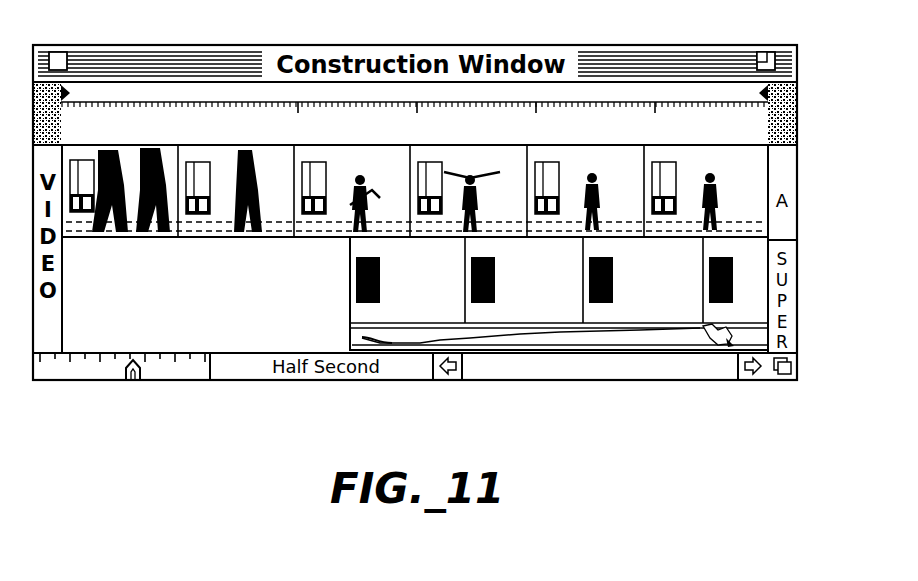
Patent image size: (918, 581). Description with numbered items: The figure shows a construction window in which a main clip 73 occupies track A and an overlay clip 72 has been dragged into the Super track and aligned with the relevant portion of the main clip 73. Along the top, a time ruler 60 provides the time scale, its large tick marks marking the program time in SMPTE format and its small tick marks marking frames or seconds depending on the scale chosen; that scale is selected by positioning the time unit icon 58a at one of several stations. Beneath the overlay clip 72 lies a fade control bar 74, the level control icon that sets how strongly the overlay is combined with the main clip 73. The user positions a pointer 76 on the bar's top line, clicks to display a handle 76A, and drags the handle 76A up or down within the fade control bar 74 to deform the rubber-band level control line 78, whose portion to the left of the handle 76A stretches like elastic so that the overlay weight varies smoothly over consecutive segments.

The time ruler 60 is at (450, 118).
The main clip 73 is at (690, 157).
The overlay clip 72 is at (348, 243).
The fade control bar 74 is at (392, 343).
The rubber-band level control line 78 is at (505, 340).
The handle 76A is at (706, 327).
The pointer 76 is at (730, 346).
The time unit icon 58a is at (136, 381).